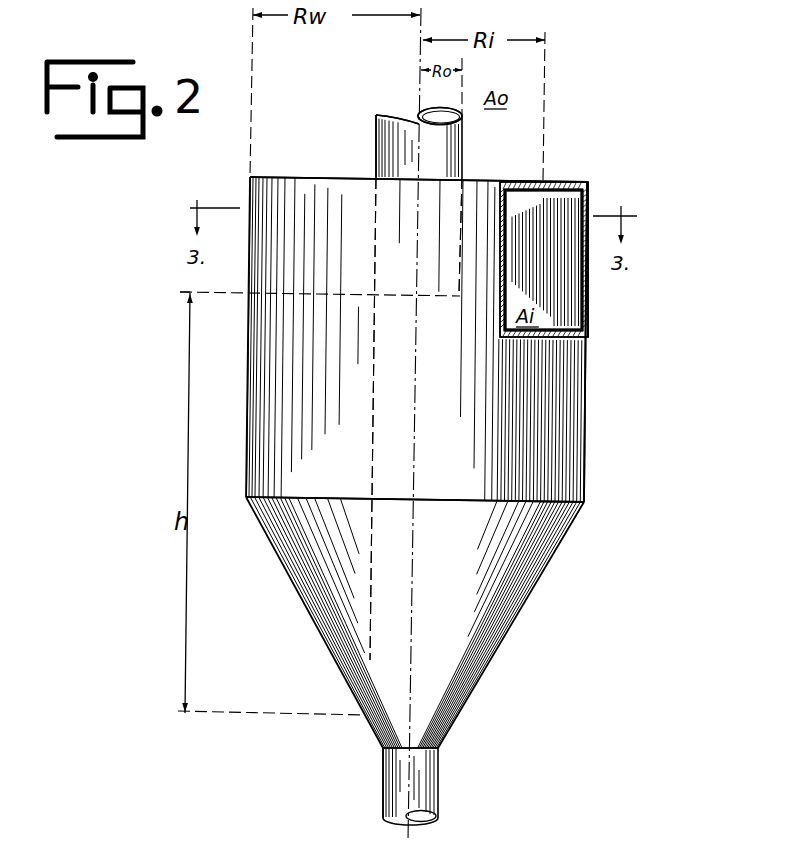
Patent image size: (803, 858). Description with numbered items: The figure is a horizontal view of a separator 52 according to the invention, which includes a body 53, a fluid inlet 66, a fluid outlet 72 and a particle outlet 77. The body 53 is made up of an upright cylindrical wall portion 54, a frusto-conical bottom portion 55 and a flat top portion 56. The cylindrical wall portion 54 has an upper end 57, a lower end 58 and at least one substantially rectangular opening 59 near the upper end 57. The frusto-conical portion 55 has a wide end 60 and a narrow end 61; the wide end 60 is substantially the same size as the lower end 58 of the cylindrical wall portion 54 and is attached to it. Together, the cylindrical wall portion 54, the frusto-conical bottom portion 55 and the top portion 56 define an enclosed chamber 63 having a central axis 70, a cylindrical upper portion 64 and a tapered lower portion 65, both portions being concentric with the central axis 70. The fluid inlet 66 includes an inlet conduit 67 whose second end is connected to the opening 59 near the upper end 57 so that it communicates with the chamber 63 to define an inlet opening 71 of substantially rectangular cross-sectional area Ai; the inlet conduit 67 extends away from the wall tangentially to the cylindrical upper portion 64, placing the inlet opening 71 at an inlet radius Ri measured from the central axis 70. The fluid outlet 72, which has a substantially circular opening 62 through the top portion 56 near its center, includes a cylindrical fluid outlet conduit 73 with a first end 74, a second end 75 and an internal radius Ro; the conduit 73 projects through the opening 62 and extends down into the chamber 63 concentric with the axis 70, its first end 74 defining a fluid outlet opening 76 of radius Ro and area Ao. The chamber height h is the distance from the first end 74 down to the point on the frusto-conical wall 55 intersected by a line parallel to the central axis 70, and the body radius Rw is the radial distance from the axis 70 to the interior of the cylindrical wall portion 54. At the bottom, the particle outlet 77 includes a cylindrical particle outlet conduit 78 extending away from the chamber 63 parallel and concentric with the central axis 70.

The separator 52 is at (110, 497).
The body 53 is at (645, 358).
The upright cylindrical wall portion 54 is at (588, 440).
The frusto-conical bottom portion 55 is at (525, 604).
The flat top portion 56 is at (565, 181).
The upper end 57 is at (588, 183).
The lower end 58 is at (585, 499).
The substantially rectangular opening 59 is at (575, 207).
The wide end 60 is at (588, 510).
The narrow end 61 is at (440, 748).
The substantially circular opening 62 is at (457, 178).
The enclosed chamber 63 is at (316, 388).
The cylindrical upper portion 64 is at (290, 322).
The tapered lower portion 65 is at (393, 565).
The fluid inlet 66 is at (593, 309).
The inlet conduit 67 is at (588, 272).
The central axis 70 is at (421, 14).
The inlet opening 71 is at (515, 245).
The fluid outlet 72 is at (376, 131).
The fluid outlet conduit 73 is at (375, 212).
The first end 74 is at (375, 288).
The second end 75 is at (391, 112).
The fluid outlet opening 76 is at (436, 293).
The particle outlet 77 is at (440, 775).
The particle outlet conduit 78 is at (390, 774).